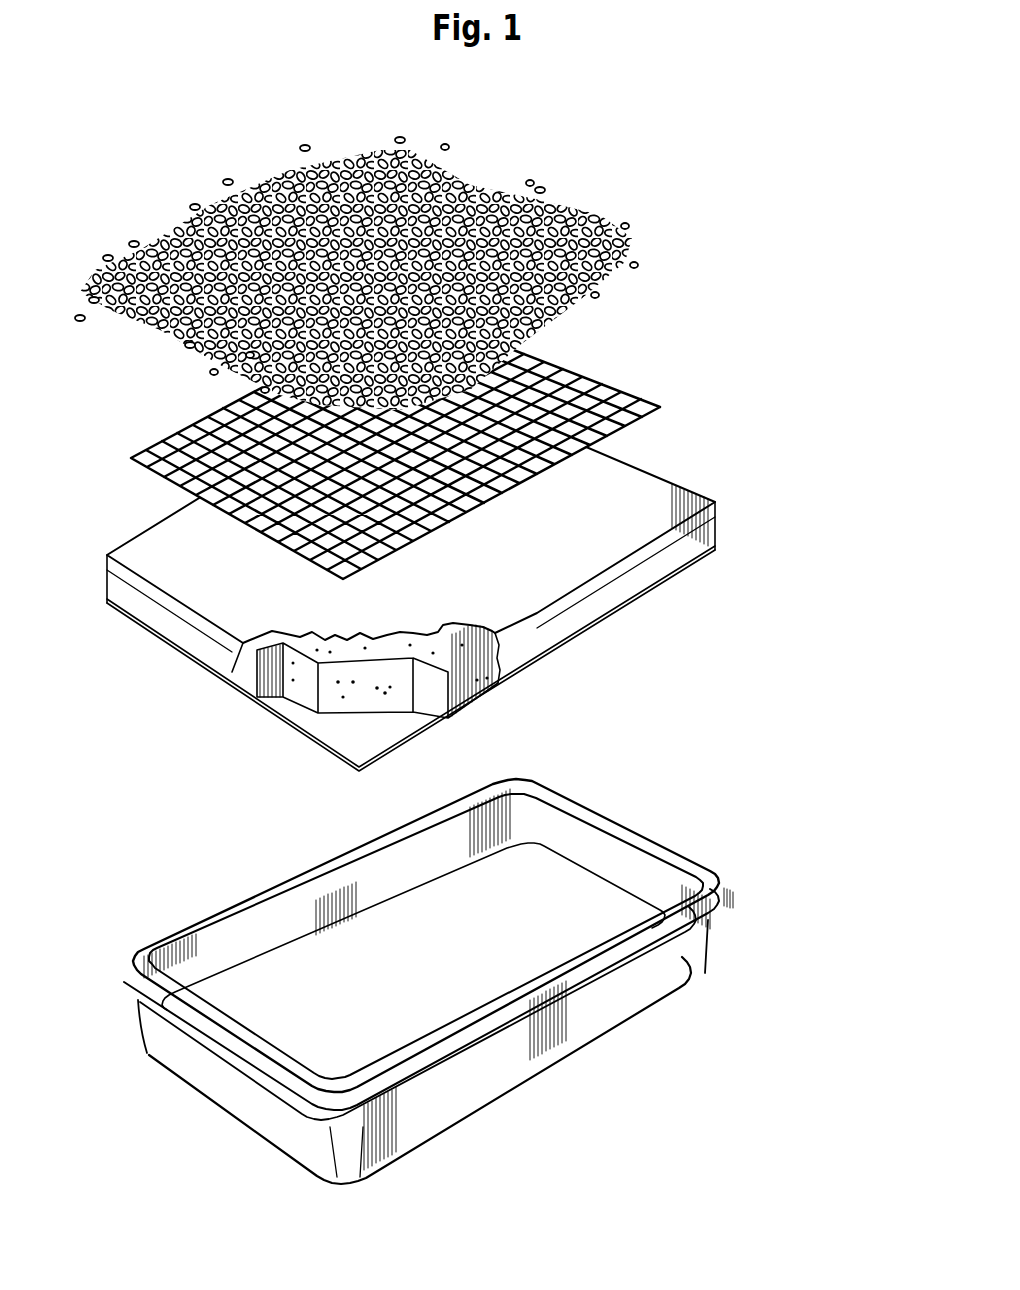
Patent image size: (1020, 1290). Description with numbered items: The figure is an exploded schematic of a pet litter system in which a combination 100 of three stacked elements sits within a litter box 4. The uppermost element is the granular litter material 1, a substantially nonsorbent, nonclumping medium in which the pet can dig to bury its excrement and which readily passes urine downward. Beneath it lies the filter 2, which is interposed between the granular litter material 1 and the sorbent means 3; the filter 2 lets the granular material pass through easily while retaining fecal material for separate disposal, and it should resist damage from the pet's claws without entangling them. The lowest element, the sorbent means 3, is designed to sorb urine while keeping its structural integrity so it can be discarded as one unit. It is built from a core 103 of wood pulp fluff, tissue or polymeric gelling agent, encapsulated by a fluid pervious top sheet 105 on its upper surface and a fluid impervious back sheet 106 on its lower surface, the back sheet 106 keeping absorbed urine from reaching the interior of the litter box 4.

The granular litter material 1 is at (648, 256).
The filter 2 is at (695, 403).
The sorbent means 3 is at (430, 570).
The litter box 4 is at (737, 942).
The combination 100 is at (810, 690).
The core 103 is at (283, 671).
The top sheet 105 is at (185, 564).
The back sheet 106 is at (370, 737).